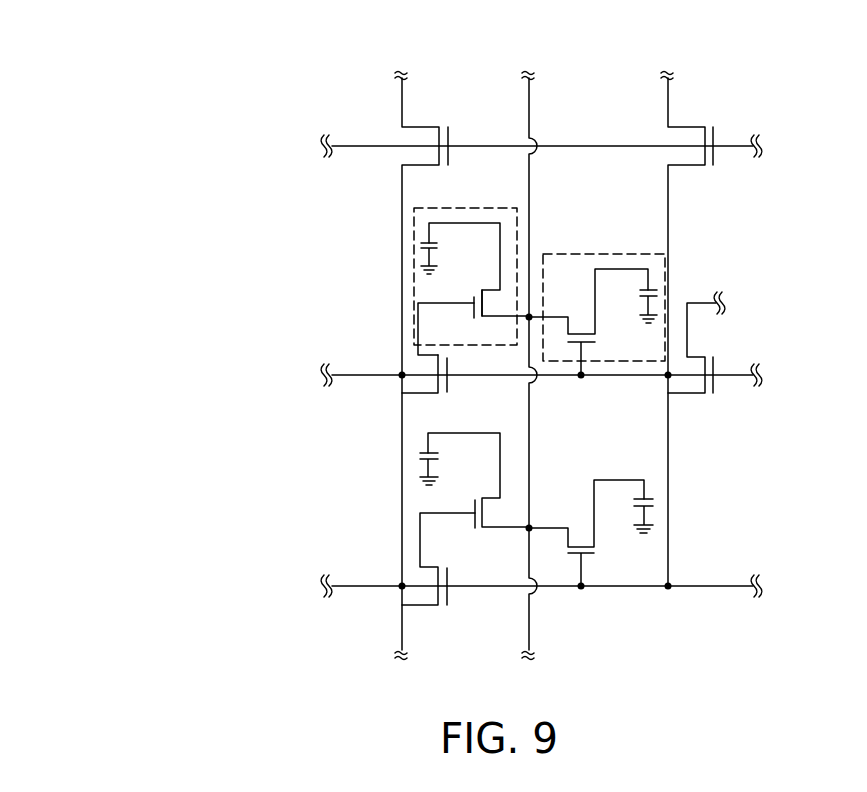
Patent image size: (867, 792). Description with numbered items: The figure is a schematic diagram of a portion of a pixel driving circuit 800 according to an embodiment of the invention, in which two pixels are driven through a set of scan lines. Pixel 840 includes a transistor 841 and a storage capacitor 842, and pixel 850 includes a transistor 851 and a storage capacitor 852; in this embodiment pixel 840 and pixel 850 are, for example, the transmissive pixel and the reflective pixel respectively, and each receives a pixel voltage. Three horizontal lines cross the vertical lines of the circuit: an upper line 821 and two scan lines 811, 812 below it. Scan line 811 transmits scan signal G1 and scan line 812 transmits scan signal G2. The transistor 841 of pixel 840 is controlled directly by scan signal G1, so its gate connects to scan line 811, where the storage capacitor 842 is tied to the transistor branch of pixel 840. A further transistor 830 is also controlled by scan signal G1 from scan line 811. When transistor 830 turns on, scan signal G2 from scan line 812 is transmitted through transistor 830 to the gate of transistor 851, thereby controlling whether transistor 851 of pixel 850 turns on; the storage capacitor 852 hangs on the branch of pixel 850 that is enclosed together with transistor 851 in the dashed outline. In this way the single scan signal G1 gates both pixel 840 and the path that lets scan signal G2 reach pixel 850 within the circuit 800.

The memory cell array 800 is at (177, 132).
The word line 821 is at (529, 182).
The scan line 811 is at (358, 373).
The scan line 812 is at (358, 585).
The pixel 850 is at (414, 268).
The transistor 851 is at (474, 297).
The storage capacitor 852 is at (427, 242).
The transistor 830 is at (447, 383).
The pixel 840 is at (668, 257).
The transistor 841 is at (575, 342).
The storage capacitor 842 is at (642, 297).